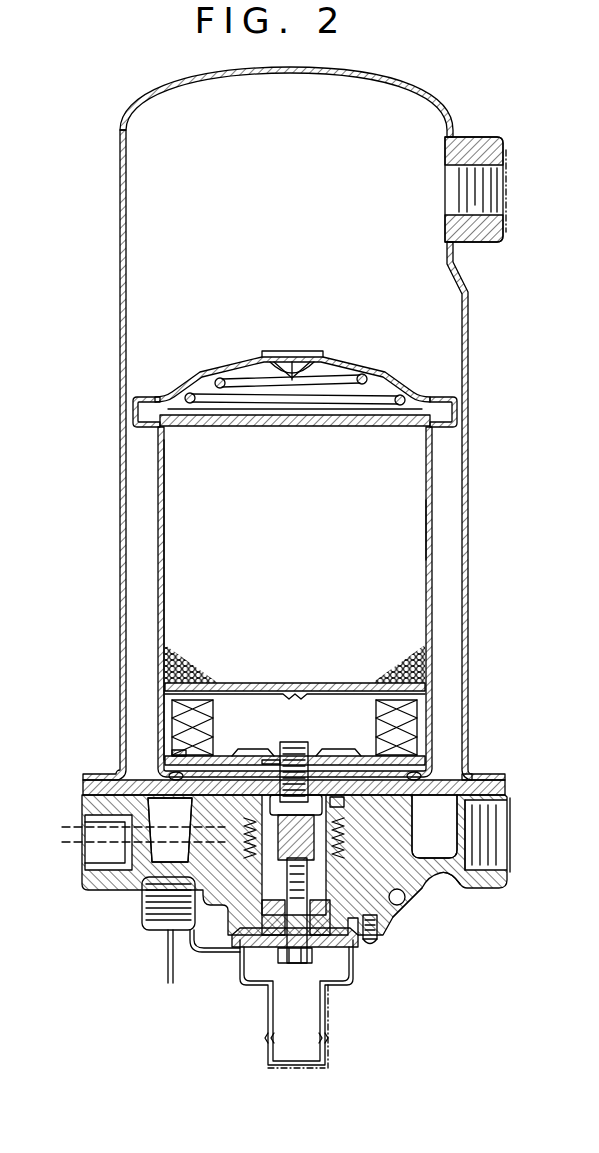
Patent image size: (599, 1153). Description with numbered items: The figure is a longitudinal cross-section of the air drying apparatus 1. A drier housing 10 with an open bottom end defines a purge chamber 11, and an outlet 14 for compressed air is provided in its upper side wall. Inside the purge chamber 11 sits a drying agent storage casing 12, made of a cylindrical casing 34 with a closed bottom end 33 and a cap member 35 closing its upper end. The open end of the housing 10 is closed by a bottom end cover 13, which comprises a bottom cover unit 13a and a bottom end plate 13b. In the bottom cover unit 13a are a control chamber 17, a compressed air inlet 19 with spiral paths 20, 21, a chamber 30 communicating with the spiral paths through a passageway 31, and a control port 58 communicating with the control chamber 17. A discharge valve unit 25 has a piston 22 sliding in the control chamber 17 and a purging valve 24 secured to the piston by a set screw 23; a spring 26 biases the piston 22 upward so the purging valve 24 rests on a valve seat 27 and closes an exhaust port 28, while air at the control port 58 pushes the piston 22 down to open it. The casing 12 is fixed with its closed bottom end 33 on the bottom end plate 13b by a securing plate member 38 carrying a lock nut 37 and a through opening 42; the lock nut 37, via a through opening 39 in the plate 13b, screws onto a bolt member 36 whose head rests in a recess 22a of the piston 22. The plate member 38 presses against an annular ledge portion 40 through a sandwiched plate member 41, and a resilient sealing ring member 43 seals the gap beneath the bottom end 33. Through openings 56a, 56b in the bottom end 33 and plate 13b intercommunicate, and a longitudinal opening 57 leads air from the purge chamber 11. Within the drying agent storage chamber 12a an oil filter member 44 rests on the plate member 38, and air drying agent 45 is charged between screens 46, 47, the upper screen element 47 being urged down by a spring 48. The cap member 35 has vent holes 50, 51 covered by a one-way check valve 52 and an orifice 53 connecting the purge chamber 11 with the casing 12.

The air drying apparatus 1 is at (428, 80).
The drier housing 10 is at (120, 342).
The purge chamber 11 is at (140, 243).
The drying agent storage casing 12 is at (435, 503).
The drying agent storage chamber 12a is at (412, 565).
The bottom end cover 13 is at (388, 932).
The bottom cover unit 13a is at (405, 885).
The bottom end plate 13b is at (500, 787).
The outlet 14 is at (497, 212).
The control chamber 17 is at (336, 800).
The compressed air inlet 19 is at (498, 852).
The spiral path 20 is at (447, 850).
The spiral path 21 is at (468, 778).
The piston 22 is at (240, 932).
The recess 22a is at (243, 843).
The set screw 23 is at (268, 1010).
The purging valve 24 is at (322, 950).
The discharge valve unit 25 is at (265, 957).
The spring 26 is at (191, 938).
The valve seat 27 is at (332, 940).
The exhaust port 28 is at (275, 1055).
The chamber 30 is at (368, 945).
The passageway 31 is at (396, 920).
The closed bottom end 33 is at (190, 752).
The cylindrical casing 34 is at (433, 528).
The cap member 35 is at (218, 373).
The bolt member 36 is at (292, 742).
The lock nut 37 is at (322, 760).
The securing plate member 38 is at (420, 735).
The through opening 39 is at (280, 752).
The annular ledge portion 40 is at (165, 762).
The sandwiched plate member 41 is at (176, 755).
The through opening 42 is at (250, 752).
The resilient sealing ring member 43 is at (418, 752).
The oil filter member 44 is at (428, 703).
The air drying agent 45 is at (430, 648).
The screen 46 is at (163, 660).
The upper screen element 47 is at (415, 422).
The spring 48 is at (360, 375).
The vent hole 50 is at (318, 358).
The vent hole 51 is at (272, 363).
The one-way check valve 52 is at (292, 372).
The orifice 53 is at (173, 390).
The through opening 56a is at (365, 688).
The through opening 56b is at (437, 826).
The longitudinal opening 57 is at (95, 822).
The control port 58 is at (100, 845).